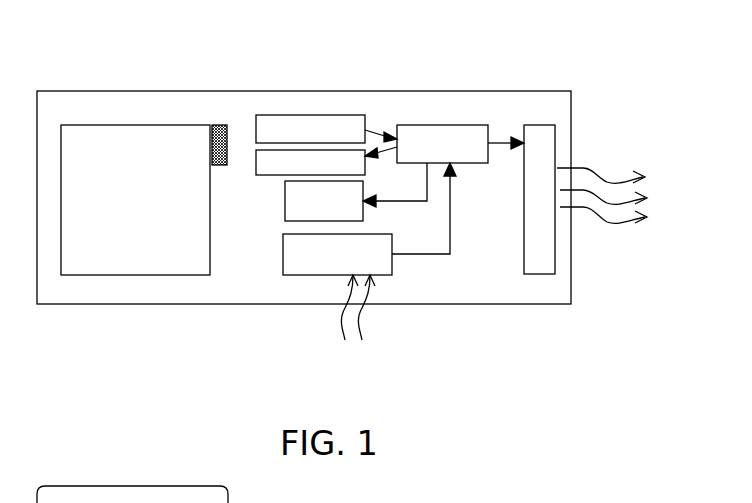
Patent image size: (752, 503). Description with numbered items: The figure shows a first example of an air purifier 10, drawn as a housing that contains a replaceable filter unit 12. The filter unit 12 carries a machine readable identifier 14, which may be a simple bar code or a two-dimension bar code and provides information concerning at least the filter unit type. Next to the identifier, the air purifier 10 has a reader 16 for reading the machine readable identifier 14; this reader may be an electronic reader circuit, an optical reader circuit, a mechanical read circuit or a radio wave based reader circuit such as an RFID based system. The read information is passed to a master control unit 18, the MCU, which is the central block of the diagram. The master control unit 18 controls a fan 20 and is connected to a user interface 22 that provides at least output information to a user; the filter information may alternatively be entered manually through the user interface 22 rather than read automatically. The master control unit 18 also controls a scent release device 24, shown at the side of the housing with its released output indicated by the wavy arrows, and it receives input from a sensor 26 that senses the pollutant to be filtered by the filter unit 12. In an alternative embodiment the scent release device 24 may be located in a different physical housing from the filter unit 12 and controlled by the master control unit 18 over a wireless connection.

The air purifier 10 is at (523, 90).
The filter unit 12 is at (112, 125).
The machine readable identifier 14 is at (224, 130).
The reader 16 is at (332, 115).
The master control unit 18 is at (458, 125).
The fan 20 is at (272, 176).
The user interface 22 is at (283, 203).
The scent release device 24 is at (557, 162).
The sensor 26 is at (323, 275).